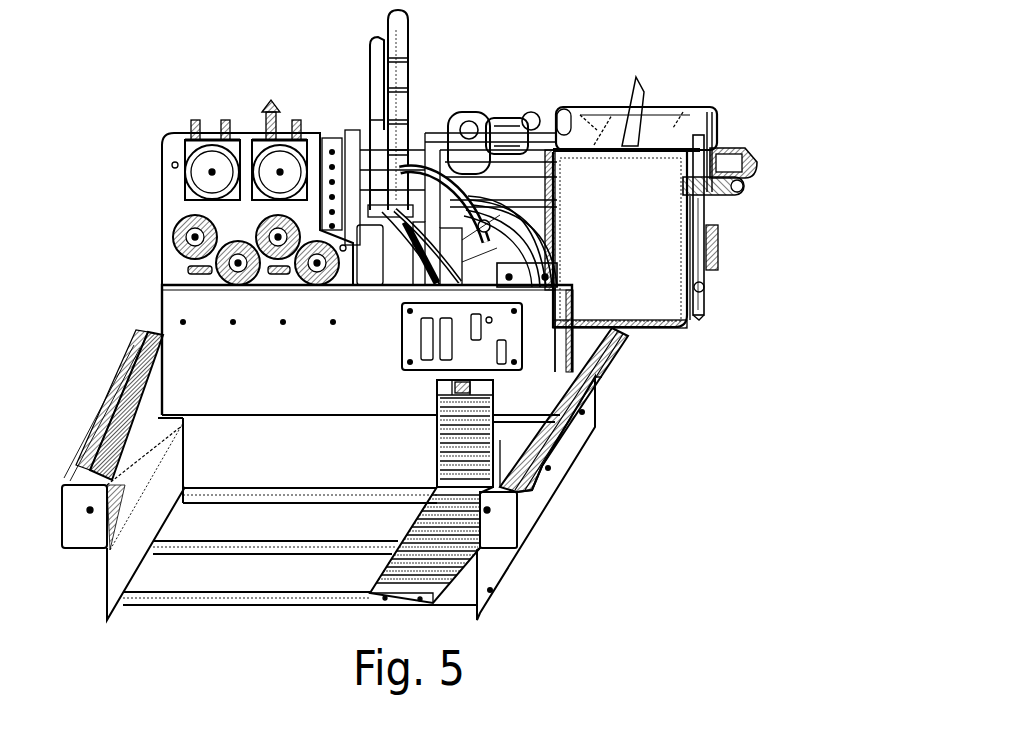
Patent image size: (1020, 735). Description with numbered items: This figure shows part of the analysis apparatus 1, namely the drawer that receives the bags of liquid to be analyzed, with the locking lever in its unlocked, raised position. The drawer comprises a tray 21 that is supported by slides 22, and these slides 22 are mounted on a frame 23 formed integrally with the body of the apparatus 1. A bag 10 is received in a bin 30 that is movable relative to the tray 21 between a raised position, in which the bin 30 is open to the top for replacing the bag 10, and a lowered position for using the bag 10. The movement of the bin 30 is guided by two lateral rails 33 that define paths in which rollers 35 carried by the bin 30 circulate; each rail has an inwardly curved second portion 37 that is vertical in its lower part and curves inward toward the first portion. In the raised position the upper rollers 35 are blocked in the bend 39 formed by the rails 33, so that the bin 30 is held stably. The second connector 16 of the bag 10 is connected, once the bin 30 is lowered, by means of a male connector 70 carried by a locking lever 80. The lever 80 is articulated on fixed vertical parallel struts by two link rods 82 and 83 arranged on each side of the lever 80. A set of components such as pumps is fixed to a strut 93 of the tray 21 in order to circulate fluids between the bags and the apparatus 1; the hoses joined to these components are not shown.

The analysis apparatus 1 is at (140, 82).
The bag 10 is at (600, 107).
The second connector 16 is at (720, 245).
The tray 21 is at (155, 338).
The slides 22 is at (610, 378).
The frame 23 is at (493, 563).
The bin 30 is at (693, 332).
The lateral rails 33 is at (560, 277).
The rollers 35 is at (560, 232).
The inwardly curved second portion 37 is at (560, 220).
The bend 39 is at (560, 257).
The male connector 70 is at (413, 100).
The locking lever 80 is at (373, 88).
The link rod 82 is at (503, 280).
The link rod 83 is at (517, 127).
The strut 93 is at (162, 188).